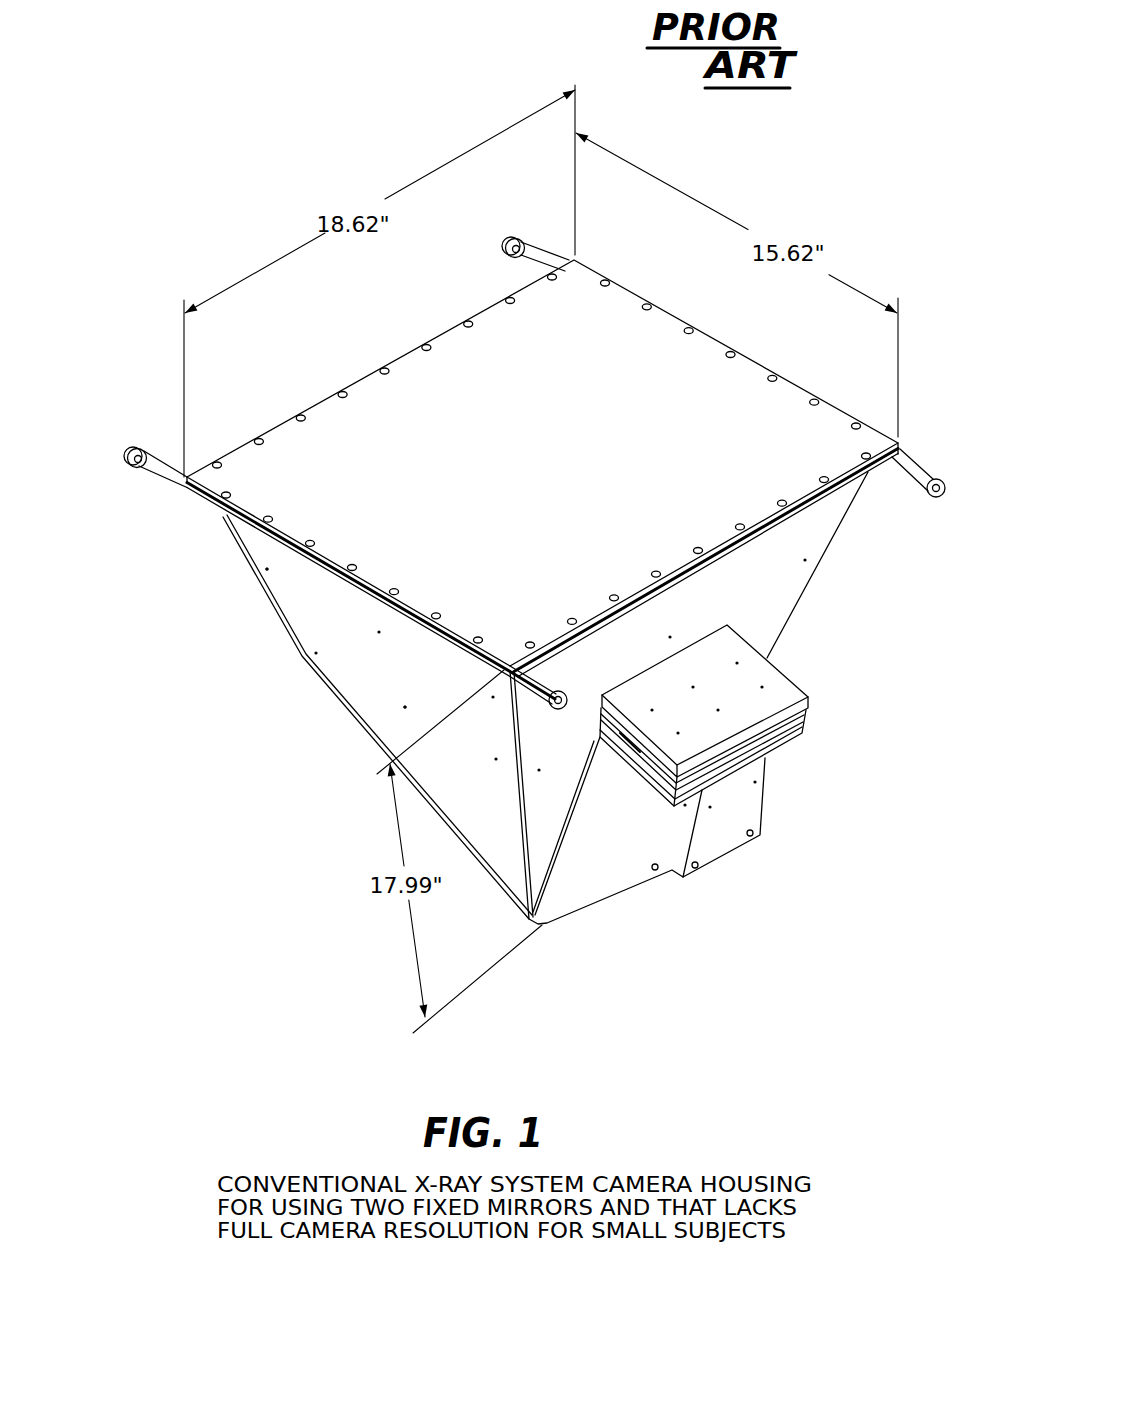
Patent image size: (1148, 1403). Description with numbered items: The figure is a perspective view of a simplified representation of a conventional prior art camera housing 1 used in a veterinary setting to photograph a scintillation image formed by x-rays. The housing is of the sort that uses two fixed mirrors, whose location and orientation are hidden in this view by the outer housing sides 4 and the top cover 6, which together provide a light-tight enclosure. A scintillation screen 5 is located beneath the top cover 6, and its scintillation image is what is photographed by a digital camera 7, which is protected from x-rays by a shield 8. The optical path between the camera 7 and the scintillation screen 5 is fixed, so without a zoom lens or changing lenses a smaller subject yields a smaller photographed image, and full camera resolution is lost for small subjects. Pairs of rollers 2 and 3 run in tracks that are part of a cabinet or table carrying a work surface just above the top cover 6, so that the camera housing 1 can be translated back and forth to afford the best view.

The camera housing 1 is at (814, 577).
The rollers 2 is at (928, 494).
The rollers 3 is at (132, 469).
The outer housing sides 4 is at (505, 777).
The scintillation screen 5 is at (713, 565).
The top cover 6 is at (504, 610).
The digital camera 7 is at (807, 723).
The shield 8 is at (782, 668).